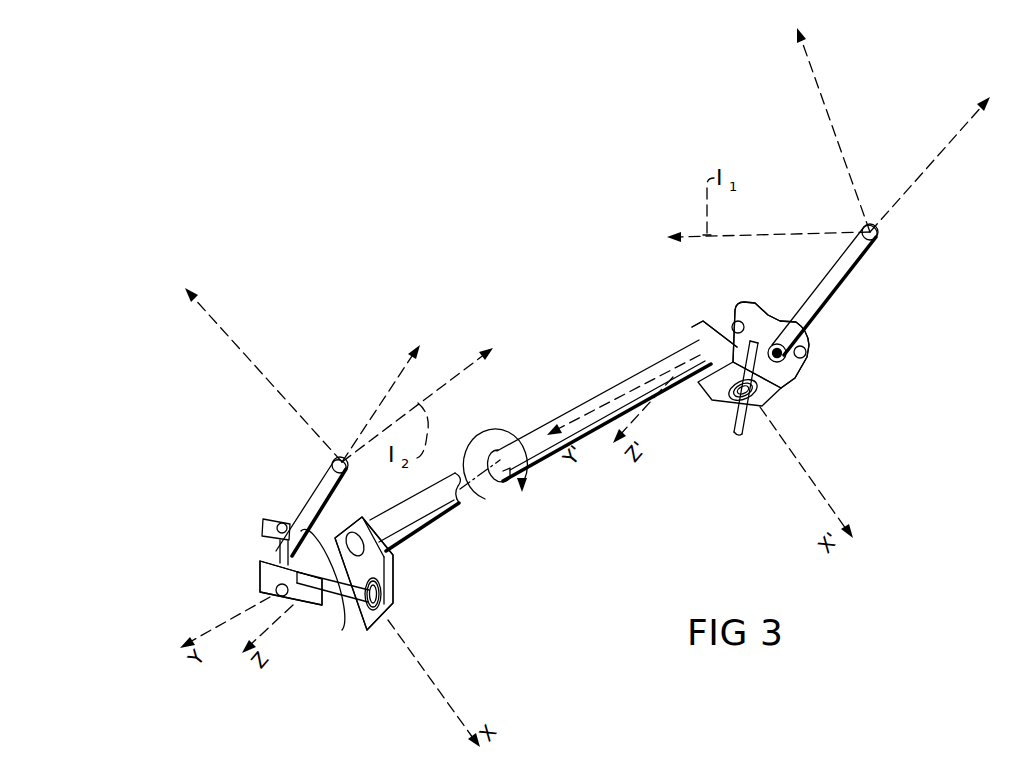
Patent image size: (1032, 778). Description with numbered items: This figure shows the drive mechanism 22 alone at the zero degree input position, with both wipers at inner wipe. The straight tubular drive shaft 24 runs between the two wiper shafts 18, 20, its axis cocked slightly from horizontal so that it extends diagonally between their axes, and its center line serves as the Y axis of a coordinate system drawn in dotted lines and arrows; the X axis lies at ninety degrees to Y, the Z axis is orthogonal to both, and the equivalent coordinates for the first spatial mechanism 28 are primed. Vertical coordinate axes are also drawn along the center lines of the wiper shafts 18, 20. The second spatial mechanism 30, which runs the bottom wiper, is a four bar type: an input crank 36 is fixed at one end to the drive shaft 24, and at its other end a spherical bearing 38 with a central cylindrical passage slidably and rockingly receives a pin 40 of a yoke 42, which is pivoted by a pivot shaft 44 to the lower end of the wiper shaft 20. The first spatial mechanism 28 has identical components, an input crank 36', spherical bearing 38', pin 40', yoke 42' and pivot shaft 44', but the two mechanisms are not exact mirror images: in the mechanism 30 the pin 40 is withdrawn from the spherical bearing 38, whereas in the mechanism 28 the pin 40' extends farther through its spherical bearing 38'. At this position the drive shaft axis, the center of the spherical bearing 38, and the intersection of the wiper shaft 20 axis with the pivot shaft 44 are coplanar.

The wiper shaft 18 is at (853, 258).
The wiper shaft 20 is at (320, 485).
The drive mechanism 22 is at (528, 532).
The drive shaft 24 is at (538, 430).
The first spatial mechanism 28 is at (803, 380).
The second spatial mechanism 30 is at (313, 608).
The input crank 36 is at (396, 573).
The input crank 36' is at (723, 407).
The spherical bearing 38 is at (375, 595).
The spherical bearing 38' is at (796, 395).
The pin 40 is at (363, 634).
The pin 40' is at (745, 448).
The yoke 42 is at (245, 583).
The yoke 42' is at (829, 345).
The pivot shaft 44 is at (236, 557).
The pivot shaft 44' is at (769, 311).